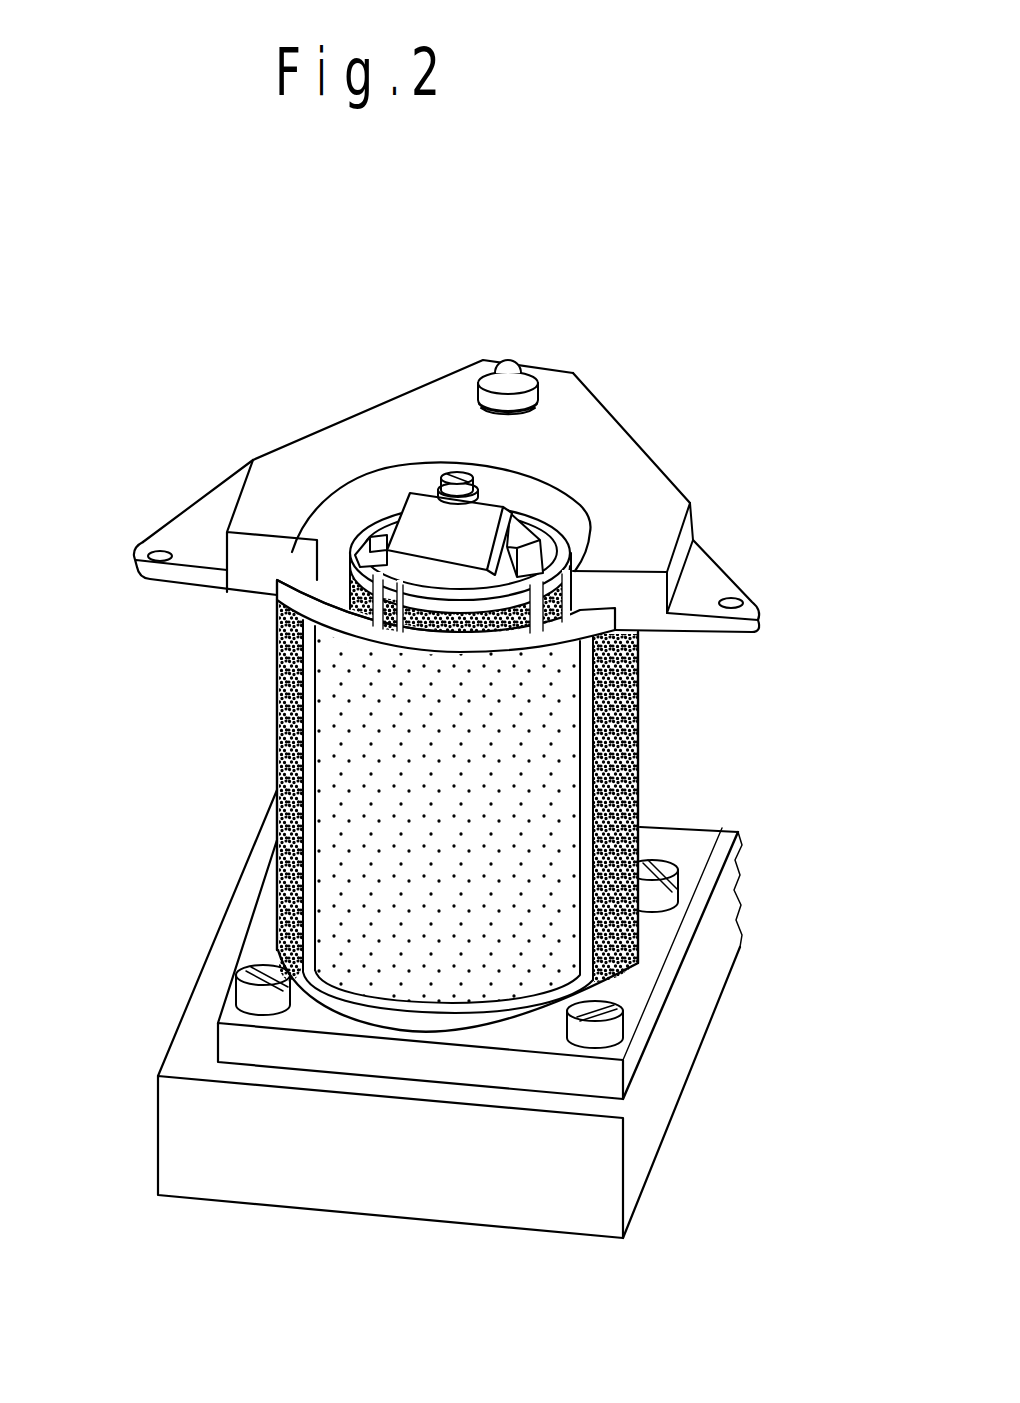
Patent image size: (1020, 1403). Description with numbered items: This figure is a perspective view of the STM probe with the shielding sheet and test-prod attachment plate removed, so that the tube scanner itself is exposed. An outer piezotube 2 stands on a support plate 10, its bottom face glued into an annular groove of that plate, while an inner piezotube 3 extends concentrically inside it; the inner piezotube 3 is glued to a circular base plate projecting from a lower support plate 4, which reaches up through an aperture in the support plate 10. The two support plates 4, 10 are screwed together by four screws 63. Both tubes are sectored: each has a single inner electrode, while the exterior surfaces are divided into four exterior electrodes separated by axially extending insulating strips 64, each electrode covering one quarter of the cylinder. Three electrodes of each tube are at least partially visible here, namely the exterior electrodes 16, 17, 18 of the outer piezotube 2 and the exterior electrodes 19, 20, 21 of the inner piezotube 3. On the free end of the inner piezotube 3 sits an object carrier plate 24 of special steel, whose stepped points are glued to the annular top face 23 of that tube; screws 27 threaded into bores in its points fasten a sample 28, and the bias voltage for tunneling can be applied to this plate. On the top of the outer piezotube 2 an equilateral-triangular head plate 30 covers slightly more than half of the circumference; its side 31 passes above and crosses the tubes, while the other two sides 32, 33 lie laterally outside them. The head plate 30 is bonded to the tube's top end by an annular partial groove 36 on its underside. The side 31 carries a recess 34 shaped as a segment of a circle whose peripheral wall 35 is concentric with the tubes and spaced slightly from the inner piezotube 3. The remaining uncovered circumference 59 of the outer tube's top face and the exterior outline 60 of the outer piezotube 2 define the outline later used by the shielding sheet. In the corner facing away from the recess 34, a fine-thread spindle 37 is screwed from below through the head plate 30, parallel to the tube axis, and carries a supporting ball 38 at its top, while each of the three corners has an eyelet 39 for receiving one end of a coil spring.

The outer piezotube 2 is at (200, 774).
The inner piezotube 3 is at (222, 712).
The support plate 4 is at (449, 1054).
The support plate 10 is at (514, 963).
The exterior electrode 16 is at (211, 793).
The exterior electrode 17 is at (447, 895).
The exterior electrode 18 is at (696, 808).
The exterior electrode 19 is at (330, 620).
The exterior electrode 20 is at (507, 657).
The exterior electrode 21 is at (575, 551).
The annular top face 23 is at (553, 469).
The object carrier plate 24 is at (550, 504).
The screw 27 is at (419, 411).
The sample 28 is at (380, 431).
The head plate 30 is at (720, 311).
The side of head plate 31 is at (187, 593).
The side of head plate 32 is at (265, 470).
The side of head plate 33 is at (724, 493).
The recess 34 is at (524, 455).
The peripheral wall 35 is at (631, 380).
The annular partial groove 36 is at (379, 498).
The fine-thread spindle 37 is at (469, 333).
The supporting ball 38 is at (494, 282).
The eyelet 39 is at (464, 427).
The circumference 59 is at (548, 622).
The exterior outline 60 is at (413, 686).
The screw 63 is at (452, 1009).
The insulating strip 64 is at (439, 819).